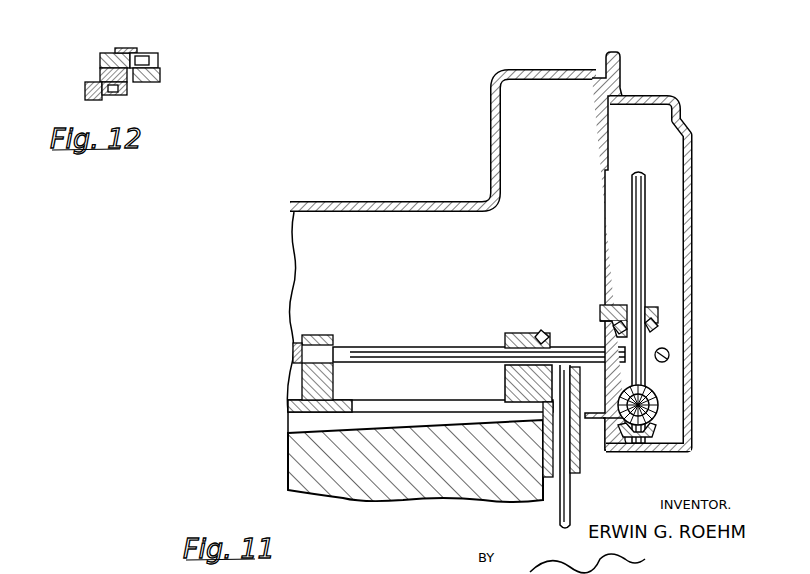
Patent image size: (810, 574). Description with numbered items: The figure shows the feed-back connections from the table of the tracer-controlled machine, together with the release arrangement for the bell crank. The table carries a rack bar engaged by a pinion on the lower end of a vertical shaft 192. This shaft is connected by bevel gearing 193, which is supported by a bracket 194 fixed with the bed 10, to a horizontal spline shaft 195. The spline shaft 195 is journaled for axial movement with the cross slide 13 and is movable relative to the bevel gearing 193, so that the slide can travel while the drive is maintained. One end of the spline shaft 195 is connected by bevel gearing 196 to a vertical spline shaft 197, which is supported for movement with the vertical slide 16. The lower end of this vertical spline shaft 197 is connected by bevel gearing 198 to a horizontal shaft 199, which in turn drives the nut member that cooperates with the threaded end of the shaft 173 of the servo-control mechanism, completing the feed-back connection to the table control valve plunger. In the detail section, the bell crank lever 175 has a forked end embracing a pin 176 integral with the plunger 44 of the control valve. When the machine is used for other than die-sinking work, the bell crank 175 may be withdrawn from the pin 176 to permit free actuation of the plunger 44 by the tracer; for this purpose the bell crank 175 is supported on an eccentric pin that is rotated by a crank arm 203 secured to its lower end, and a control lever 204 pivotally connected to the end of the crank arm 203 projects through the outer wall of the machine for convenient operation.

In FIG. 11, the bed 10 is at (295, 465).
In FIG. 11, the slide 13 is at (415, 207).
In FIG. 11, the vertically movable slide 16 is at (694, 147).
In FIG. 11, the shaft 173 is at (670, 357).
In FIG. 11, the vertical shaft 192 is at (558, 516).
In FIG. 11, the bevel gearing 193 is at (544, 330).
In FIG. 11, the bracket 194 is at (506, 386).
In FIG. 11, the horizontal spline shaft 195 is at (398, 336).
In FIG. 11, the bevel gearing 196 is at (660, 340).
In FIG. 11, the vertical spline shaft 197 is at (648, 244).
In FIG. 11, the bevel gearing 198 is at (656, 433).
In FIG. 11, the horizontal shaft 199 is at (660, 410).
In FIG. 12, the bell crank lever 175 is at (98, 54).
In FIG. 12, the pin 176 is at (160, 58).
In FIG. 12, the plunger 44 is at (160, 80).
In FIG. 12, the crank arm 203 is at (128, 92).
In FIG. 12, the control lever 204 is at (85, 87).